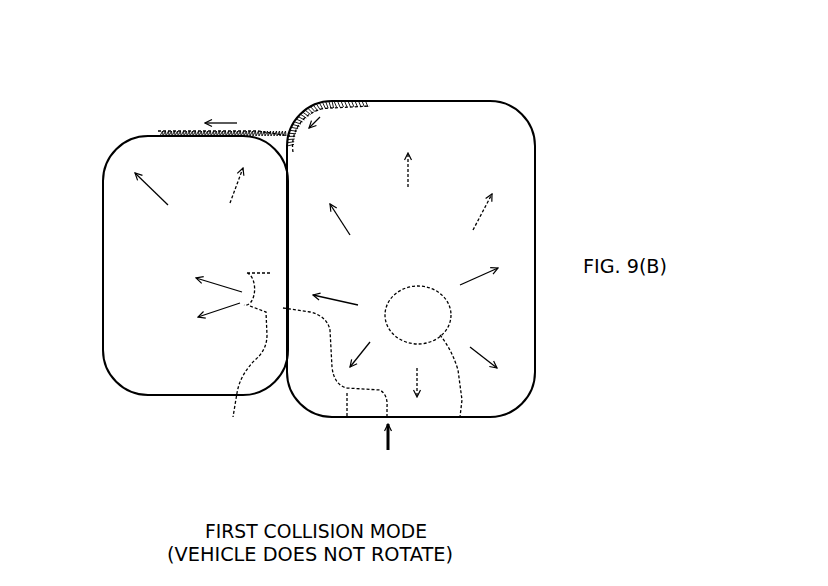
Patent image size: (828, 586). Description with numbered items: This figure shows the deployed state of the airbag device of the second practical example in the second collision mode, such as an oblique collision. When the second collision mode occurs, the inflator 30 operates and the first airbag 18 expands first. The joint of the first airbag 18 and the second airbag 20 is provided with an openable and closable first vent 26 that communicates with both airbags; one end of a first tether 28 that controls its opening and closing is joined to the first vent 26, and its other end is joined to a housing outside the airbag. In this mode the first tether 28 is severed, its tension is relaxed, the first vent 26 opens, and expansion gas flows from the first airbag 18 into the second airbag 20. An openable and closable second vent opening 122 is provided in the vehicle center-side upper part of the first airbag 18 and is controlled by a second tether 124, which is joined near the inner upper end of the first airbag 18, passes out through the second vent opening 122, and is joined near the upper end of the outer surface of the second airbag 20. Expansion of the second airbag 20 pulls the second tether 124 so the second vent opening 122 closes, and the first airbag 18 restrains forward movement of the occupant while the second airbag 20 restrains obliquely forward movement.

The first airbag 18 is at (537, 158).
The second airbag 20 is at (127, 389).
The first vent 26 is at (237, 398).
The first tether 28 is at (345, 416).
The inflator 30 is at (455, 416).
The second vent opening 122 is at (331, 101).
The second tether 124 is at (287, 135).